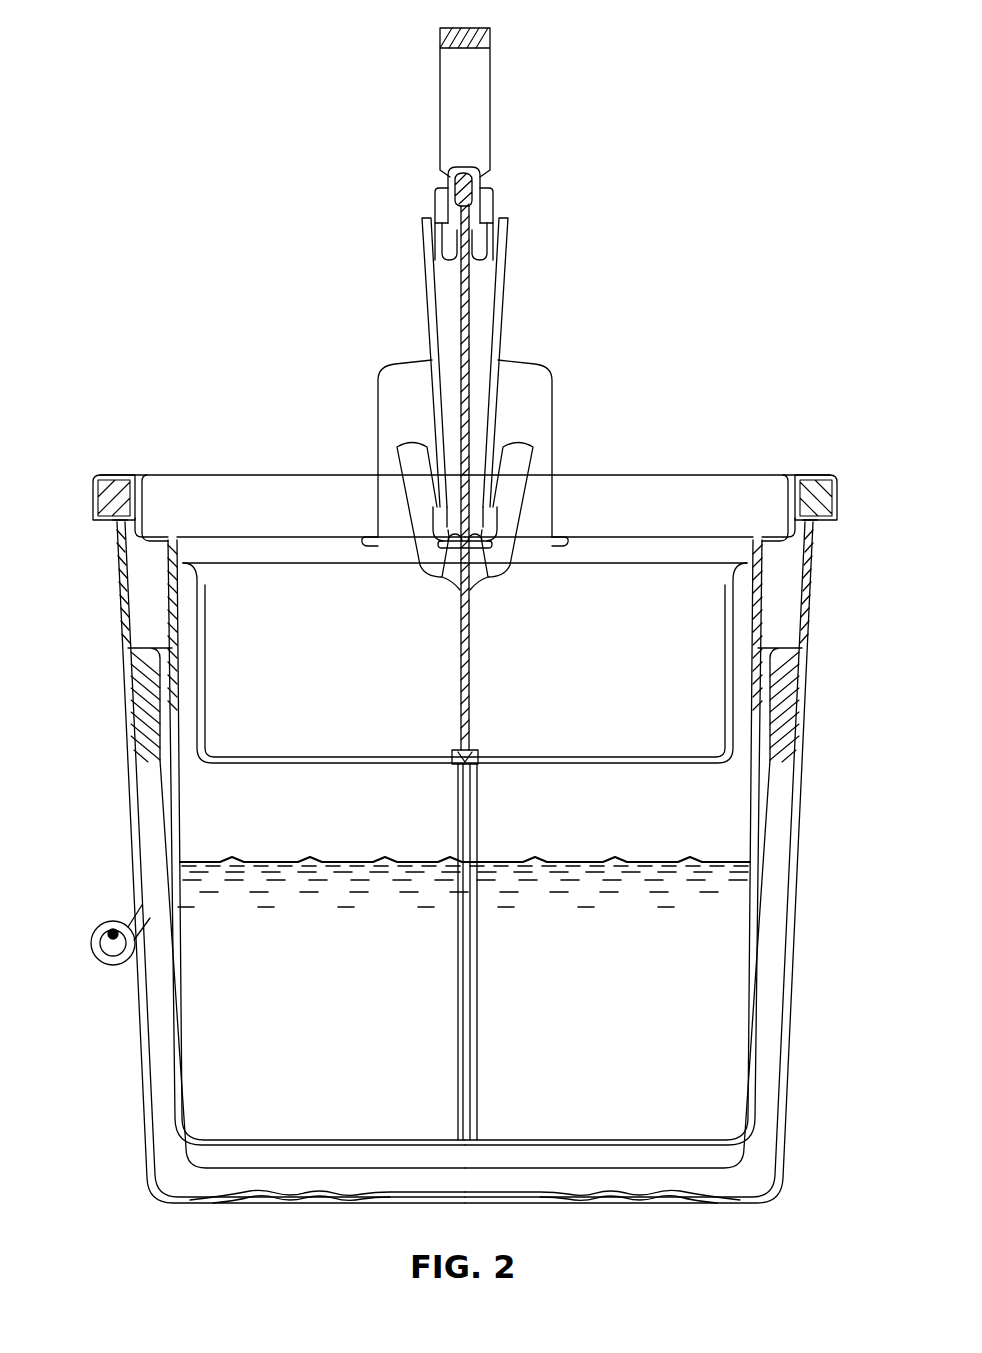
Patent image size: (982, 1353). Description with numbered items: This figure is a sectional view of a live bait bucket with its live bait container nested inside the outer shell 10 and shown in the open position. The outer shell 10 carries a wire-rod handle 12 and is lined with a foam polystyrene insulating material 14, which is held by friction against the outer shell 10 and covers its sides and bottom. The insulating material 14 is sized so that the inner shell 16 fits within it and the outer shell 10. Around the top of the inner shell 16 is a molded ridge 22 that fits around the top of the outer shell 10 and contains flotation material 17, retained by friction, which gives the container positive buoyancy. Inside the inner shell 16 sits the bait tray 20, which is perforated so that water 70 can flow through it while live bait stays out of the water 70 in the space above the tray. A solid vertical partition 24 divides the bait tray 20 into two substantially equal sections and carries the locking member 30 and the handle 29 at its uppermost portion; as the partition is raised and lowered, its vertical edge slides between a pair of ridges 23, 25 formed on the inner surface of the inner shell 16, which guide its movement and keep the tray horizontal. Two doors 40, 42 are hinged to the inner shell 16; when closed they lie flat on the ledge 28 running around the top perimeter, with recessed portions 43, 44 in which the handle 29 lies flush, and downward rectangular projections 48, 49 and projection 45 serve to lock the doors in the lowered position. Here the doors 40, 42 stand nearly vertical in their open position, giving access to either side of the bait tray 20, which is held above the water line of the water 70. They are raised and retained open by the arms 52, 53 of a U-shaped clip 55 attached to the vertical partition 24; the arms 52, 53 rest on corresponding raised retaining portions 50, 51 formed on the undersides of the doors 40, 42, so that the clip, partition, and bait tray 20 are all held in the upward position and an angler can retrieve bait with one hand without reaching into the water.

The outer shell 10 is at (810, 680).
The handle 12 is at (100, 924).
The insulating material 14 is at (790, 708).
The inner shell 16 is at (762, 758).
The flotation material 17 is at (115, 500).
The bait tray 20 is at (735, 635).
The molded ridge 22 is at (108, 476).
The ridge 23 is at (457, 826).
The vertical partition 24 is at (461, 683).
The ridge 25 is at (477, 802).
The ledge 28 is at (172, 474).
The handle 29 is at (440, 76).
The locking member 30 is at (490, 200).
The door 40 is at (424, 276).
The door 42 is at (504, 298).
The recessed portion 43 is at (395, 364).
The recessed portion 44 is at (546, 366).
The downward projection 45 is at (484, 570).
The downward rectangular projection 48 is at (378, 548).
The downward rectangular projection 49 is at (548, 548).
The raised retaining portion 50 is at (433, 512).
The raised retaining portion 51 is at (497, 507).
The arm 52 is at (430, 505).
The arm 53 is at (513, 470).
The U-shaped clip 55 is at (517, 525).
The water 70 is at (330, 976).